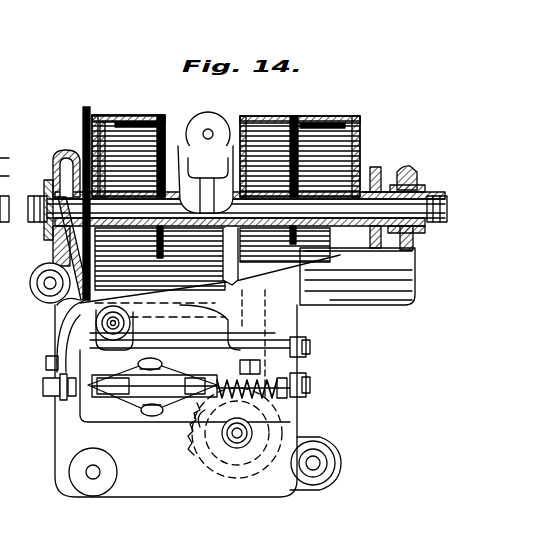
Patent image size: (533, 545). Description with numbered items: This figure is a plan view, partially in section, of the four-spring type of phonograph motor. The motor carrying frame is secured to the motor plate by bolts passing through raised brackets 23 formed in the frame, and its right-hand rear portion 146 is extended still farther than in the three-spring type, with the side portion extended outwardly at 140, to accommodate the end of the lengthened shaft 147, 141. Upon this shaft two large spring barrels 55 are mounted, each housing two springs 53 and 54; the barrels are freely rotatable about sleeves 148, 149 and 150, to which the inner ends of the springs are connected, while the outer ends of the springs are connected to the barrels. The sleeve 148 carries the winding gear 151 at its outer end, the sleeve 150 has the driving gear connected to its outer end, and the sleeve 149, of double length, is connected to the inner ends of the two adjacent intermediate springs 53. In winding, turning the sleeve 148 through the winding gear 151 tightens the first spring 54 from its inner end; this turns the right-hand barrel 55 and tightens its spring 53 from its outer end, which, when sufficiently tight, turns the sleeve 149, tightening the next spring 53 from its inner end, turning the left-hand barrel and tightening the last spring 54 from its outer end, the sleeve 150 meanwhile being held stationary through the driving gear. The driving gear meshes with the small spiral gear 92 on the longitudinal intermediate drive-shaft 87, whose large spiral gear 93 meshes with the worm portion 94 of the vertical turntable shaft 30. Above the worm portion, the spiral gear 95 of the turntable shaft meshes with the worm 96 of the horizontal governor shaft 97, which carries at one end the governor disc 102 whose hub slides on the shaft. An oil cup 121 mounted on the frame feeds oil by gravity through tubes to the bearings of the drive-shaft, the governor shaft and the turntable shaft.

The raised bracket 23 is at (215, 120).
The turntable shaft 30 is at (238, 447).
The spring 53 is at (163, 122).
The spring 54 is at (118, 127).
The spring barrel 55 is at (147, 115).
The intermediate drive-shaft 87 is at (190, 352).
The spiral gear 92 is at (88, 320).
The spiral gear 93 is at (292, 367).
The worm portion 94 is at (283, 425).
The spiral gear 95 is at (200, 428).
The worm 96 is at (305, 380).
The governor shaft 97 is at (183, 397).
The disc 102 is at (83, 410).
The oil cup 121 is at (120, 324).
The extended side-portion 140 is at (8, 158).
The lengthened shaft 141 is at (0, 176).
The rear portion of motor frame 146 is at (405, 250).
The shaft 147 is at (372, 167).
The sleeve 148 is at (345, 232).
The sleeve 149 is at (232, 284).
The sleeve 150 is at (100, 232).
The winding gear 151 is at (383, 168).